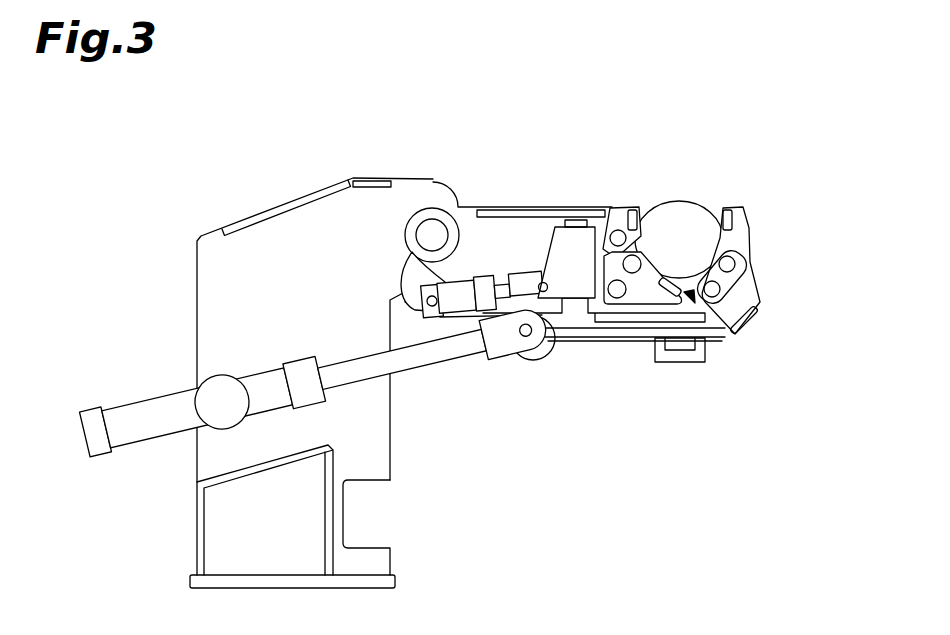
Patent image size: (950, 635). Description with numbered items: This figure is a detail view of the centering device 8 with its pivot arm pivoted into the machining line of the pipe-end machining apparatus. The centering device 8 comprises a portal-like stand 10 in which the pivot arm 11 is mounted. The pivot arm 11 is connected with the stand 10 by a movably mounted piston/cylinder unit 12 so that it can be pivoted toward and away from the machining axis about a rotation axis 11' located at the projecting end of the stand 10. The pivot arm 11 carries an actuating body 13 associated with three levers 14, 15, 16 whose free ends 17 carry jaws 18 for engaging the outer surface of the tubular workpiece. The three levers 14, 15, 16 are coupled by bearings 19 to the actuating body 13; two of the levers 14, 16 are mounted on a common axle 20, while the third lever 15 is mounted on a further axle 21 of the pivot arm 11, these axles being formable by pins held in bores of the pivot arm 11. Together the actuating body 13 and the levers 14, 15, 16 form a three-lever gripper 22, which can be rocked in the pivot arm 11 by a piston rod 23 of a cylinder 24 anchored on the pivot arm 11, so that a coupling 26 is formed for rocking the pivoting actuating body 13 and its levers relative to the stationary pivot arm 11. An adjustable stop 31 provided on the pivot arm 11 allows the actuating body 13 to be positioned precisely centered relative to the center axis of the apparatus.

The centering device 8 is at (465, 330).
The portal-like stand 10 is at (250, 243).
The pivot arm 11 is at (565, 261).
The rotation axis 11' is at (436, 180).
The piston/cylinder unit 12 is at (126, 418).
The actuating body 13 is at (565, 243).
The lever 14 is at (650, 290).
The lever 15 is at (747, 232).
The lever 16 is at (621, 218).
The free ends 17 is at (633, 214).
The jaws 18 is at (696, 291).
The bearings 19 is at (617, 237).
The common axle 20 is at (632, 266).
The further axle 21 is at (745, 263).
The three-lever gripper 22 is at (709, 282).
The piston rod 23 is at (520, 290).
The cylinder 24 is at (428, 288).
The coupling 26 is at (695, 303).
The adjustable stop 31 is at (685, 350).